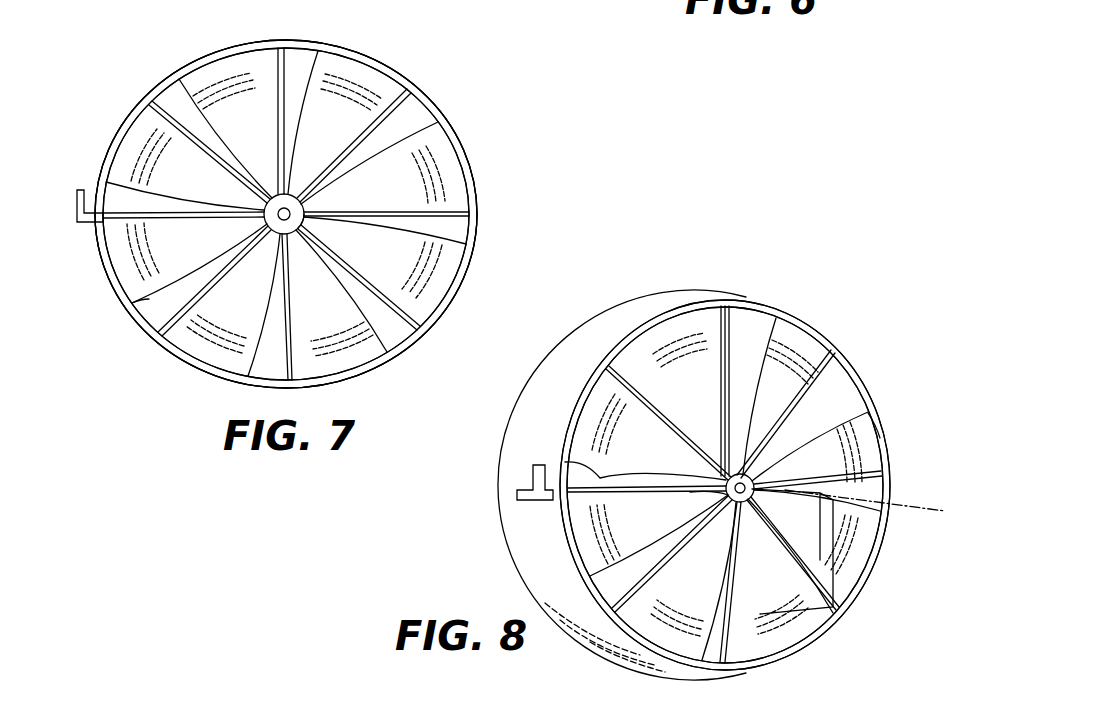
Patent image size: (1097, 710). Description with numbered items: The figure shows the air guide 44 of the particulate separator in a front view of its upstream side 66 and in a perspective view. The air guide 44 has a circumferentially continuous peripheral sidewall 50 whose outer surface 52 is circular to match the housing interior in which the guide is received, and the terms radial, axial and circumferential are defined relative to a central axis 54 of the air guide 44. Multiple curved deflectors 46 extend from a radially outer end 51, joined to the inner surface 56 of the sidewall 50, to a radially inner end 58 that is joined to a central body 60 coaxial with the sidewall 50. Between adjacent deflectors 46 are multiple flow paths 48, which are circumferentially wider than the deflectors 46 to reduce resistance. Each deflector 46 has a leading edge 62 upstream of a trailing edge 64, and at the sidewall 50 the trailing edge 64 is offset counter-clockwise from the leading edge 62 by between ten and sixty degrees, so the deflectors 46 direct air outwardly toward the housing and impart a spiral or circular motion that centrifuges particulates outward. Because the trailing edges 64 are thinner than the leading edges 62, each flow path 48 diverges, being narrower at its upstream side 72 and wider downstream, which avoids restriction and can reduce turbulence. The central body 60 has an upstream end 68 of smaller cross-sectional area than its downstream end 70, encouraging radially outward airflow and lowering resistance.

In FIG. 7, the air guide 44 is at (110, 372).
In FIG. 8, the air guide 44 is at (882, 278).
In FIG. 7, the deflectors 46 is at (247, 82).
In FIG. 8, the deflectors 46 is at (752, 330).
In FIG. 7, the flow paths 48 is at (303, 50).
In FIG. 8, the flow paths 48 is at (580, 482).
In FIG. 7, the peripheral sidewall 50 is at (163, 85).
In FIG. 8, the peripheral sidewall 50 is at (867, 392).
In FIG. 7, the radially outer end 51 is at (127, 136).
In FIG. 8, the radially outer end 51 is at (783, 337).
In FIG. 7, the outer surface 52 is at (173, 68).
In FIG. 8, the outer surface 52 is at (620, 310).
In FIG. 8, the central axis 54 is at (907, 507).
In FIG. 7, the inner surface 56 is at (150, 314).
In FIG. 8, the inner surface 56 is at (860, 530).
In FIG. 7, the radially inner end 58 is at (277, 236).
In FIG. 8, the radially inner end 58 is at (740, 500).
In FIG. 7, the central body 60 is at (307, 223).
In FIG. 8, the central body 60 is at (670, 483).
In FIG. 7, the leading edge 62 is at (278, 66).
In FIG. 8, the leading edge 62 is at (823, 370).
In FIG. 7, the trailing edge 64 is at (197, 108).
In FIG. 8, the trailing edge 64 is at (605, 478).
In FIG. 7, the upstream side 66 is at (458, 145).
In FIG. 8, the upstream side 66 is at (627, 640).
In FIG. 7, the upstream end 68 is at (280, 200).
In FIG. 8, the upstream end 68 is at (745, 474).
In FIG. 8, the downstream end 70 is at (673, 515).
In FIG. 7, the upstream side 72 is at (90, 206).
In FIG. 8, the upstream side 72 is at (500, 447).